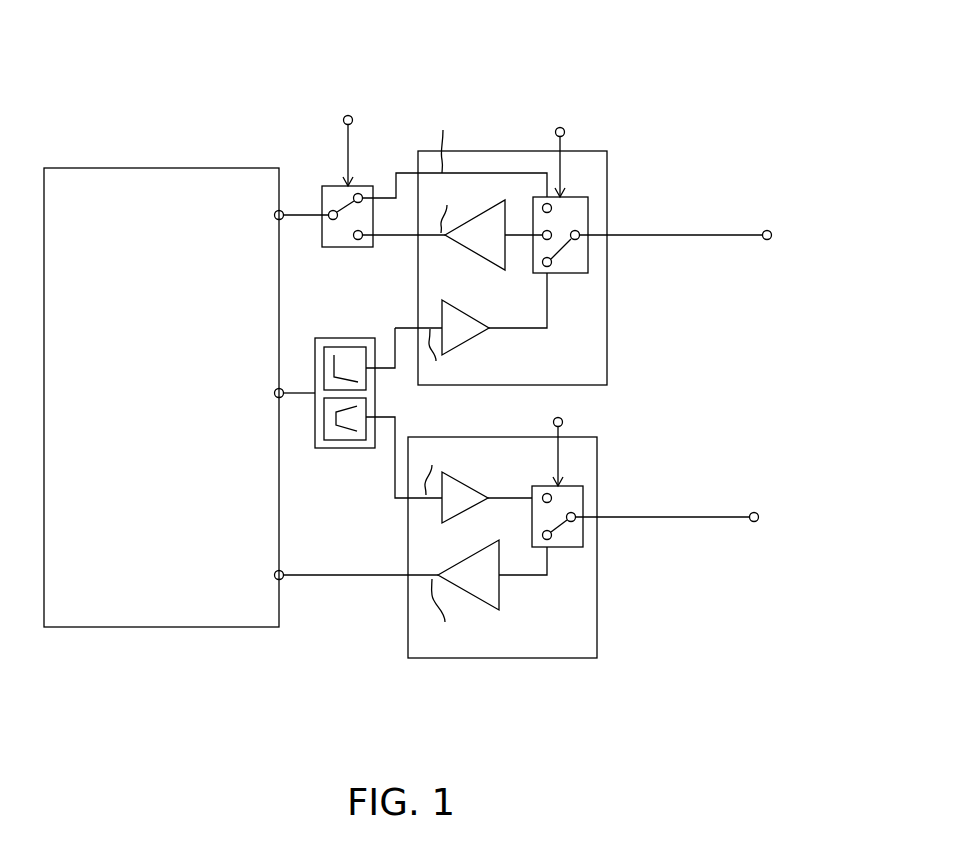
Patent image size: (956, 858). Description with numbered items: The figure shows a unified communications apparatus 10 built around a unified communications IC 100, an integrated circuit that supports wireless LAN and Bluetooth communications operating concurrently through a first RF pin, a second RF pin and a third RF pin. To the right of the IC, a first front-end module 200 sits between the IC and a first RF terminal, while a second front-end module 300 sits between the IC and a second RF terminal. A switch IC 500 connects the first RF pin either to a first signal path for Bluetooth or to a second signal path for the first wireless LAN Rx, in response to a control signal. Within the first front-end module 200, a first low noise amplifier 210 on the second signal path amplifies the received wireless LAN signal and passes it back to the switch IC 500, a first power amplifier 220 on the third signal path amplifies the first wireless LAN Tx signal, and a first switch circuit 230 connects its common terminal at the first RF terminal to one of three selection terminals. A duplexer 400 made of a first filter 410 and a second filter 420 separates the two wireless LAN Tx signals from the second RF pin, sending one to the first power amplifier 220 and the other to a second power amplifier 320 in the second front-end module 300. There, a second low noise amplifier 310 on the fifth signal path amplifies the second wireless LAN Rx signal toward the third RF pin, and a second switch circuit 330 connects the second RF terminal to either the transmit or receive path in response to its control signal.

The unified communications apparatus 10 is at (392, 45).
The unified communications IC 100 is at (160, 168).
The first front-end module 200 is at (513, 151).
The first low noise amplifier 210 is at (486, 264).
The first power amplifier 220 is at (463, 301).
The first switch circuit 230 is at (553, 197).
The second front-end module 300 is at (497, 658).
The second low noise amplifier 310 is at (466, 556).
The second power amplifier 320 is at (466, 482).
The second switch circuit 330 is at (559, 547).
The duplexer 400 is at (363, 391).
The first filter 410 is at (351, 347).
The second filter 420 is at (352, 448).
The switch IC 500 is at (356, 186).